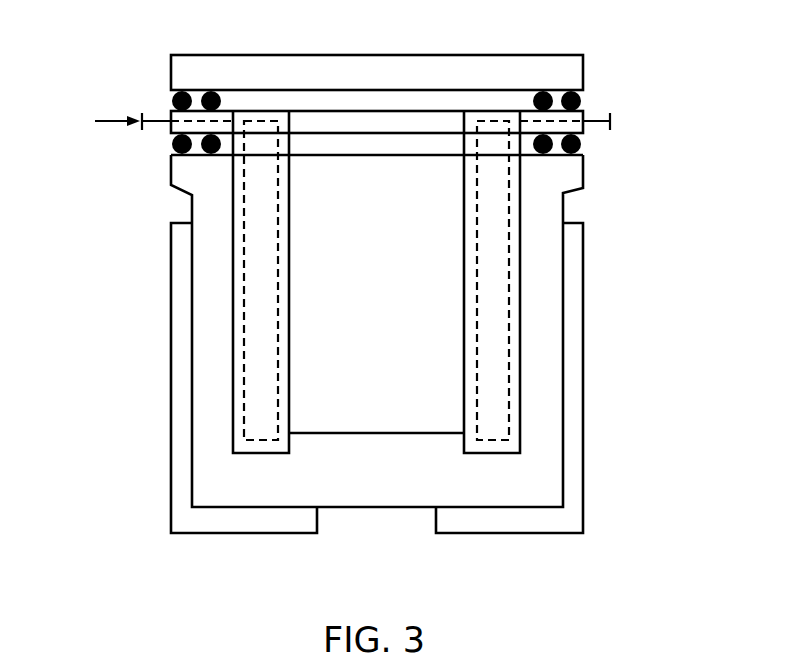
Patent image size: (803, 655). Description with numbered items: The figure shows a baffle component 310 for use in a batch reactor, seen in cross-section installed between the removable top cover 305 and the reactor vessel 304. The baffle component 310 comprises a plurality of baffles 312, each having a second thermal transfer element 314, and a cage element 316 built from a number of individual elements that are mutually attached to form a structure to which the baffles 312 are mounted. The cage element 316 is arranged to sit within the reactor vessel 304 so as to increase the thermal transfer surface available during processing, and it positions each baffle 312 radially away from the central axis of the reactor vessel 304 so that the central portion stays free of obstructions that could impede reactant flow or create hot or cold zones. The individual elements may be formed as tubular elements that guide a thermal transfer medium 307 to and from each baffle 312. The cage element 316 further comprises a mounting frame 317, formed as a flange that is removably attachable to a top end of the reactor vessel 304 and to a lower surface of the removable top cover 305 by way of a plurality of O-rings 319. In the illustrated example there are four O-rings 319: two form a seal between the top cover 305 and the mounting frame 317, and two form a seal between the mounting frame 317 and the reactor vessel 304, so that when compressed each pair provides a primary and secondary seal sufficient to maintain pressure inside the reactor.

The reactor vessel 304 is at (578, 192).
The removable top cover 305 is at (355, 56).
The thermal transfer medium 307 is at (112, 121).
The baffle component 310 is at (585, 124).
The baffle 312 is at (233, 381).
The second thermal transfer element 314 is at (244, 249).
The cage element 316 is at (377, 435).
The mounting frame 317 is at (412, 125).
The O-ring 319 is at (174, 97).